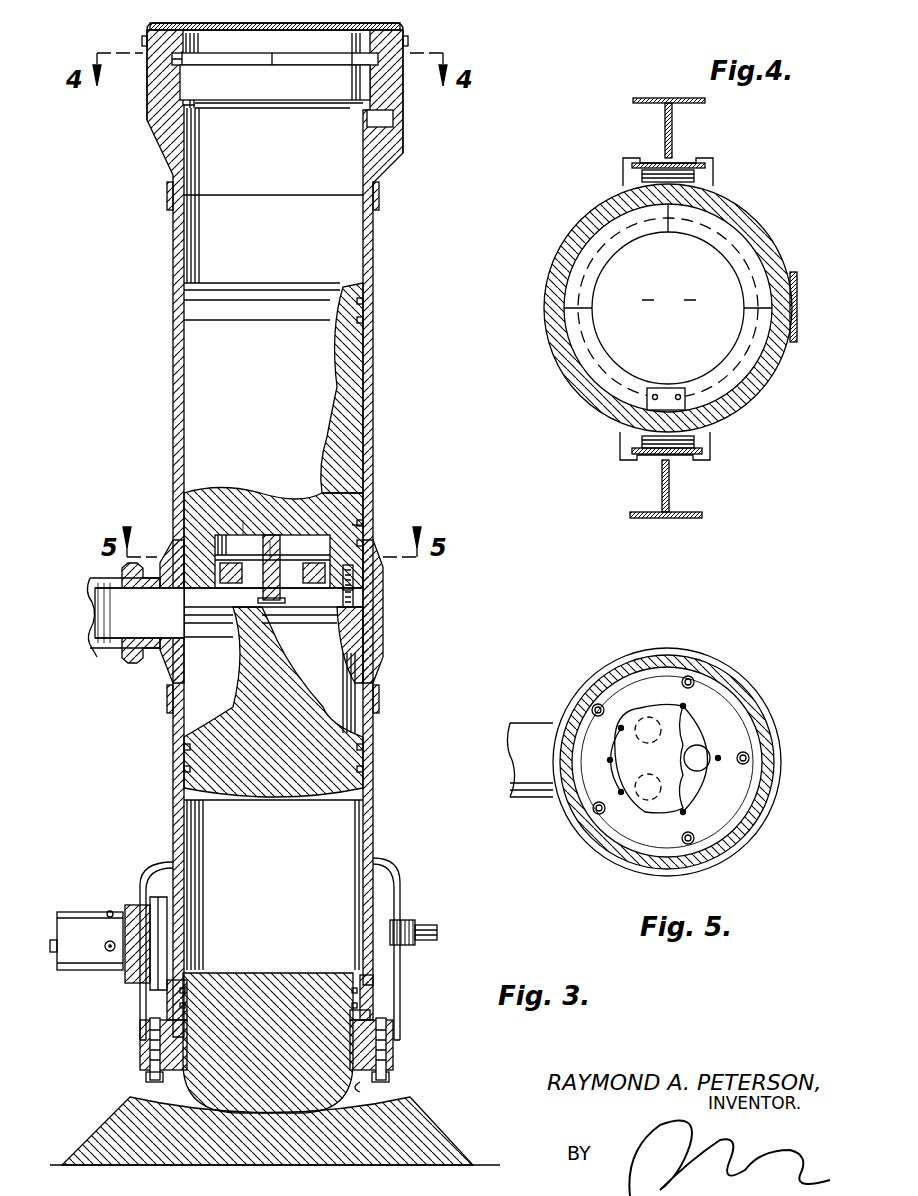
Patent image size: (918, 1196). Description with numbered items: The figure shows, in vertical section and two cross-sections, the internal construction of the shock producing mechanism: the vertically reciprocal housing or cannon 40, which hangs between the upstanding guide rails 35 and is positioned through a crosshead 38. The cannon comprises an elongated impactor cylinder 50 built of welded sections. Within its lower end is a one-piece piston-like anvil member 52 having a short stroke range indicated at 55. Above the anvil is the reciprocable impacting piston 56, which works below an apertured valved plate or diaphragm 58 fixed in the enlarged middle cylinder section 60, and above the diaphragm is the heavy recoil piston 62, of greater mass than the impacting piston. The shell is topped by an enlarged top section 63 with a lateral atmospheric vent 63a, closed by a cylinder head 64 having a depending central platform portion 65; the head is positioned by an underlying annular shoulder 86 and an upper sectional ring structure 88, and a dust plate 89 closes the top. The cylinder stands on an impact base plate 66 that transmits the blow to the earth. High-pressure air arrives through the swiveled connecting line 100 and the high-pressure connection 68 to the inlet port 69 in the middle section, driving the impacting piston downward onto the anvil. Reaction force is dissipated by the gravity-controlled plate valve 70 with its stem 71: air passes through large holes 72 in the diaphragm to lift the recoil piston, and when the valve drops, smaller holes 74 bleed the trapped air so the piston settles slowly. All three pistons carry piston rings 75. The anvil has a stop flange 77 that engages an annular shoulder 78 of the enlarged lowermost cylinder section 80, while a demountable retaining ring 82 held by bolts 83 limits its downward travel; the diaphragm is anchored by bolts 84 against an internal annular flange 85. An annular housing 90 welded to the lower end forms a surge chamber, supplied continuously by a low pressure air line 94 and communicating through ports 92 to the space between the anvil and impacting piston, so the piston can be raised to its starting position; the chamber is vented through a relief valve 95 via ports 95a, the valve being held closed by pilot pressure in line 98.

In FIG. 4, the guide rails 35 is at (665, 125).
In FIG. 4, the crosshead 38 is at (706, 438).
In FIG. 3, the cannon 40 is at (170, 246).
In FIG. 3, the impactor cylinder 50 is at (366, 357).
In FIG. 5, the impactor cylinder 50 is at (759, 794).
In FIG. 3, the anvil member 52 is at (245, 988).
In FIG. 3, the stroke range gap 55 is at (362, 1088).
In FIG. 3, the impacting piston 56 is at (335, 683).
In FIG. 3, the valved plate 58 is at (363, 526).
In FIG. 5, the valved plate 58 is at (704, 703).
In FIG. 3, the middle cylinder section 60 is at (376, 606).
In FIG. 5, the middle cylinder section 60 is at (642, 650).
In FIG. 3, the recoil piston 62 is at (352, 423).
In FIG. 3, the top section 63 is at (160, 73).
In FIG. 4, the top section 63 is at (764, 378).
In FIG. 3, the atmospheric vent 63a is at (382, 117).
In FIG. 3, the cylinder head 64 is at (275, 98).
In FIG. 4, the cylinder head 64 is at (669, 300).
In FIG. 3, the central platform portion 65 is at (306, 106).
In FIG. 3, the impact base plate 66 is at (420, 1120).
In FIG. 3, the high-pressure connection 68 is at (122, 578).
In FIG. 5, the high-pressure connection 68 is at (523, 758).
In FIG. 3, the inlet port 69 is at (184, 606).
In FIG. 3, the plate valve 70 is at (347, 508).
In FIG. 5, the plate valve 70 is at (668, 720).
In FIG. 3, the valve stem 71 is at (272, 568).
In FIG. 3, the large holes 72 is at (352, 535).
In FIG. 5, the large holes 72 is at (702, 752).
In FIG. 3, the small holes 74 is at (243, 522).
In FIG. 5, the small holes 74 is at (683, 706).
In FIG. 3, the piston rings 75 is at (363, 320).
In FIG. 3, the stop flange 77 is at (376, 1022).
In FIG. 3, the annular shoulder 78 is at (372, 1012).
In FIG. 3, the lowermost cylinder section 80 is at (388, 1034).
In FIG. 3, the retaining ring 82 is at (140, 1048).
In FIG. 3, the bolts 83 is at (146, 1072).
In FIG. 3, the bolts 84 is at (355, 573).
In FIG. 5, the bolts 84 is at (749, 757).
In FIG. 3, the internal annular flange 85 is at (343, 594).
In FIG. 3, the annular shoulder 86 is at (190, 99).
In FIG. 3, the ring structure 88 is at (275, 71).
In FIG. 4, the ring structure 88 is at (729, 246).
In FIG. 3, the dust plate 89 is at (385, 23).
In FIG. 3, the annular housing 90 is at (392, 878).
In FIG. 3, the ports 92 is at (147, 999).
In FIG. 3, the low pressure air line 94 is at (425, 927).
In FIG. 3, the relief valve 95 is at (80, 912).
In FIG. 3, the vent ports 95a is at (106, 943).
In FIG. 3, the pilot pressure line 98 is at (53, 940).
In FIG. 3, the swiveled connecting line 100 is at (97, 649).